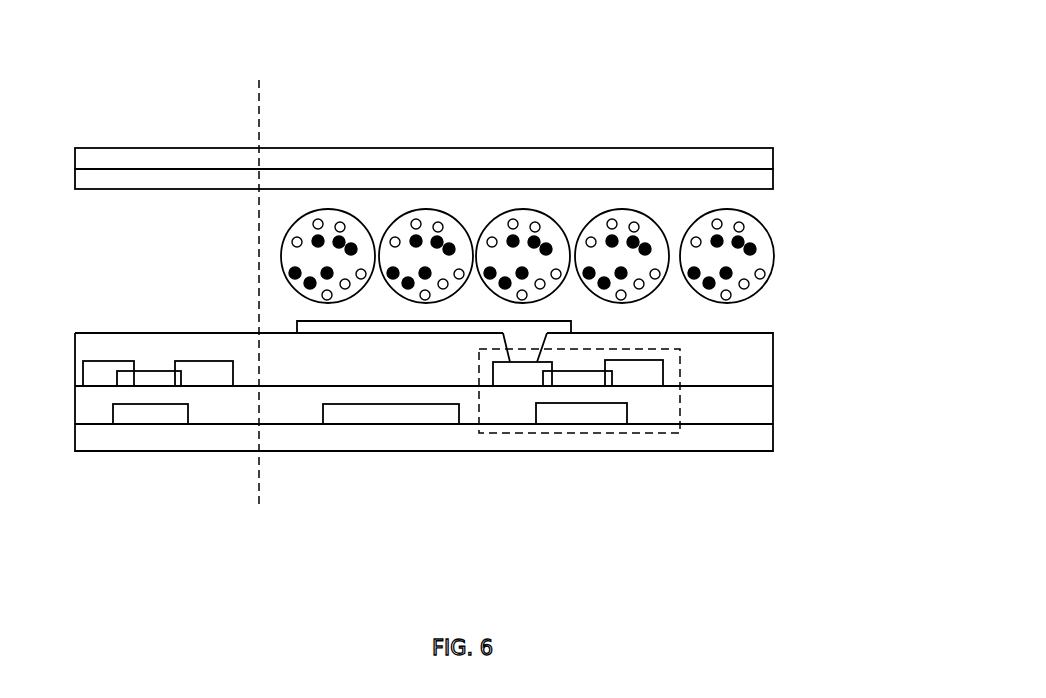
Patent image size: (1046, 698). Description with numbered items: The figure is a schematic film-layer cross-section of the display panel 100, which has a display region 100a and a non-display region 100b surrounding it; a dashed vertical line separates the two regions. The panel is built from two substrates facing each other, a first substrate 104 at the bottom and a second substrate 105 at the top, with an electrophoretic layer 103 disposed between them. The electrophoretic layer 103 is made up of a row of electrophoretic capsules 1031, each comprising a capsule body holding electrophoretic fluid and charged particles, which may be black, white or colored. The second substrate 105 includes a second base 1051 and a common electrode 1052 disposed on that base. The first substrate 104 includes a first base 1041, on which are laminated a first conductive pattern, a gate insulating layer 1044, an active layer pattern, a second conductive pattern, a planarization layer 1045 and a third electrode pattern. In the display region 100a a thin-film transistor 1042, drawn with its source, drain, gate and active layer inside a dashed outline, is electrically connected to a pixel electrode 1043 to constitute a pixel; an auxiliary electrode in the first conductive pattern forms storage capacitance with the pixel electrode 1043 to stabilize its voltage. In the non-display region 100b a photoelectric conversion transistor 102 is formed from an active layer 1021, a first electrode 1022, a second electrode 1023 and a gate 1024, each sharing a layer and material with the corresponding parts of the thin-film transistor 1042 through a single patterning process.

The display panel 100 is at (86, 68).
The display region 100a is at (471, 122).
The non-display region 100b is at (150, 122).
The photoelectric conversion transistor 102 is at (198, 545).
The active layer 1021 is at (169, 386).
The first electrode 1022 is at (99, 383).
The second electrode 1023 is at (213, 383).
The gate 1024 is at (133, 420).
The electrophoretic layer 103 is at (578, 235).
The electrophoretic capsule 1031 is at (838, 257).
The first substrate 104 is at (783, 333).
The first base 1041 is at (464, 450).
The thin-film transistor 1042 is at (579, 427).
The pixel electrode 1043 is at (310, 341).
The gate insulating layer 1044 is at (692, 422).
The planarization layer 1045 is at (738, 375).
The second substrate 105 is at (424, 133).
The second base 1051 is at (717, 152).
The common electrode 1052 is at (637, 170).